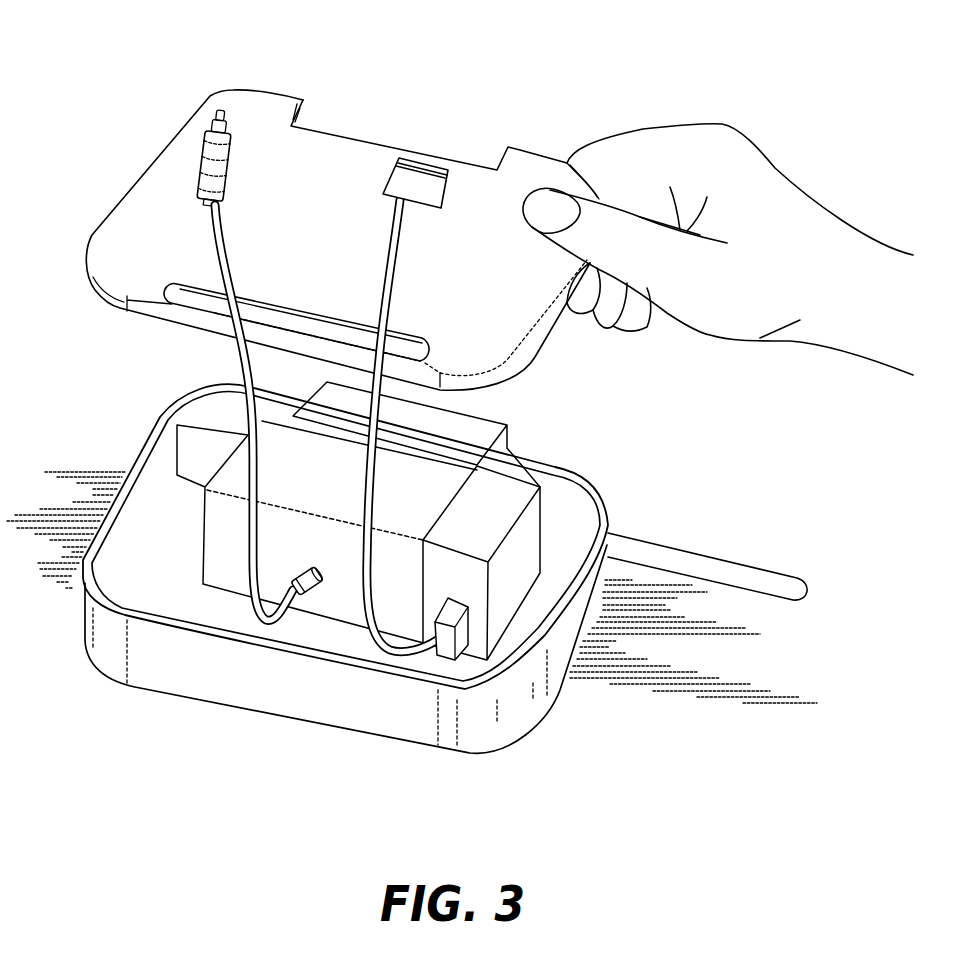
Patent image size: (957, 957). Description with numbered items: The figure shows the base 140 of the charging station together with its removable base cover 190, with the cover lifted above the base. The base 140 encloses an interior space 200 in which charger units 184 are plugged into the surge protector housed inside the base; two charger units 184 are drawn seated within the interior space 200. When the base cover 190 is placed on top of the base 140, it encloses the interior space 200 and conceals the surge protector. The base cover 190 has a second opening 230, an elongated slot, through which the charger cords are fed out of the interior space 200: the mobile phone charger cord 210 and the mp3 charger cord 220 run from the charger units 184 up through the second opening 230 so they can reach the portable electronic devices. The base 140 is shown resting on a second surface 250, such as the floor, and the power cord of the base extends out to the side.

The base 140 is at (480, 727).
The charger unit 184 is at (217, 522).
The base cover 190 is at (523, 175).
The interior space 200 is at (205, 613).
The mobile phone charger cord 210 is at (213, 225).
The mp3 charger cord 220 is at (345, 197).
The second opening 230 is at (273, 307).
The second surface 250 is at (730, 690).